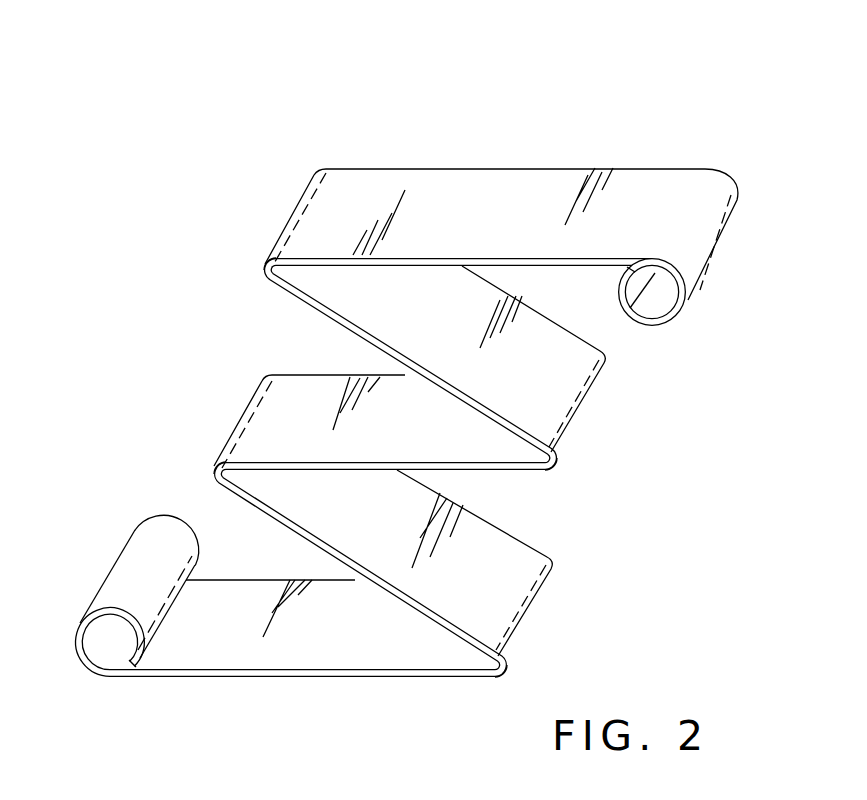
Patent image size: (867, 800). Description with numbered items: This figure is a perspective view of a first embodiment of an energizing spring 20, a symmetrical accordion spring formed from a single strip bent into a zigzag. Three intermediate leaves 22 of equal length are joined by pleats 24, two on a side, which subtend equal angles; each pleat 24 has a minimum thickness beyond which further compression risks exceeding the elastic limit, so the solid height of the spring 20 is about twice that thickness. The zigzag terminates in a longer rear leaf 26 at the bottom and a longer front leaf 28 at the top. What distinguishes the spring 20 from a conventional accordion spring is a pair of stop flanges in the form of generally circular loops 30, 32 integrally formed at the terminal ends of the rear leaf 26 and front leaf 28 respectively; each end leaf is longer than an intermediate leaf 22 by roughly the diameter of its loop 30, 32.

The energizing spring 20 is at (645, 148).
The intermediate leaves 22 is at (345, 308).
The pleats 24 is at (262, 270).
The rear leaf 26 is at (333, 630).
The front leaf 28 is at (497, 190).
The rear loop 30 is at (120, 610).
The front loop 32 is at (652, 327).